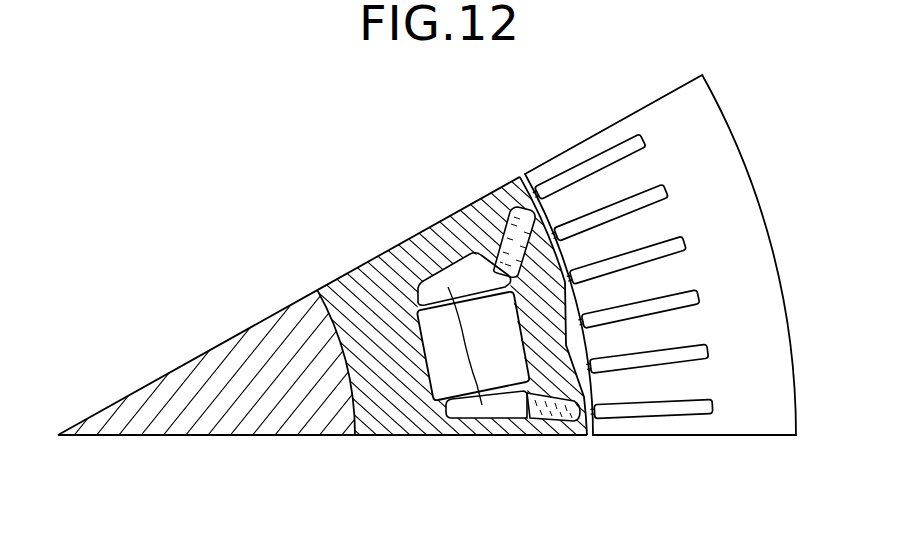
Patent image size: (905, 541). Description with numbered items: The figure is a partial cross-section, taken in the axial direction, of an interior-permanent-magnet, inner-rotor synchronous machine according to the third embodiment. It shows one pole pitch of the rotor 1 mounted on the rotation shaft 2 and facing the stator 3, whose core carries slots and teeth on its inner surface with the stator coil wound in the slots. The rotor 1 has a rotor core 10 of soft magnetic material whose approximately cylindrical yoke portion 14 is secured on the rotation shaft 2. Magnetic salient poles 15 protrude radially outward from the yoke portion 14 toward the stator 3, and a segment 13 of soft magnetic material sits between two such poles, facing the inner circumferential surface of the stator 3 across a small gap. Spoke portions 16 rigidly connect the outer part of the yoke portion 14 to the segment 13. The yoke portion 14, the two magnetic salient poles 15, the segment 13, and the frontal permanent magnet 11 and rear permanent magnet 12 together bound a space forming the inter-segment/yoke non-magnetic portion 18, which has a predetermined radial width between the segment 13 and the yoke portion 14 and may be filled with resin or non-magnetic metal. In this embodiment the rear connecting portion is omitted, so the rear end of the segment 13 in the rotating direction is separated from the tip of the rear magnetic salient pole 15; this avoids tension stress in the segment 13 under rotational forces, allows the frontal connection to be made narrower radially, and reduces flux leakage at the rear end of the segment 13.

The rotor 1 is at (358, 166).
The rotation shaft 2 is at (210, 413).
The stator 3 is at (774, 176).
The rotor core 10 is at (331, 262).
The frontal permanent magnet 11 is at (493, 223).
The rear permanent magnet 12 is at (557, 423).
The segment 13 is at (546, 325).
The yoke portion 14 is at (388, 418).
The magnetic salient pole 15 is at (433, 238).
The spoke portion 16 is at (400, 268).
The inter-segment/yoke non-magnetic portion 18 is at (447, 353).